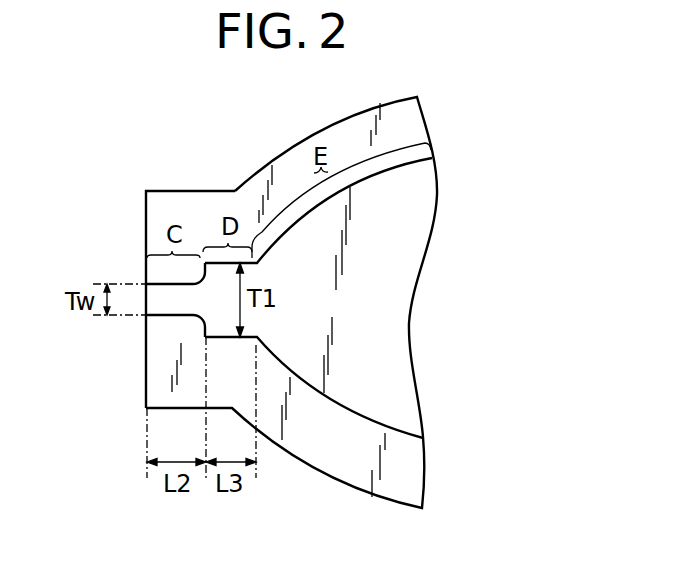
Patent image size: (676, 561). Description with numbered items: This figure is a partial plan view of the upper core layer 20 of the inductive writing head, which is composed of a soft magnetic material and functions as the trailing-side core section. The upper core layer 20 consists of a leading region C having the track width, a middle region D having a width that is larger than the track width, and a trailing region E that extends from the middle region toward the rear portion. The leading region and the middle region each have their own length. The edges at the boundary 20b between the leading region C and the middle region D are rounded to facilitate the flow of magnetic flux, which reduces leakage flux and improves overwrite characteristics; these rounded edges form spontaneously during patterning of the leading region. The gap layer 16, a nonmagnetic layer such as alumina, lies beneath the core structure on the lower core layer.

The gap layer 16 is at (198, 200).
The upper core layer 20 is at (390, 244).
The boundary 20b is at (184, 273).